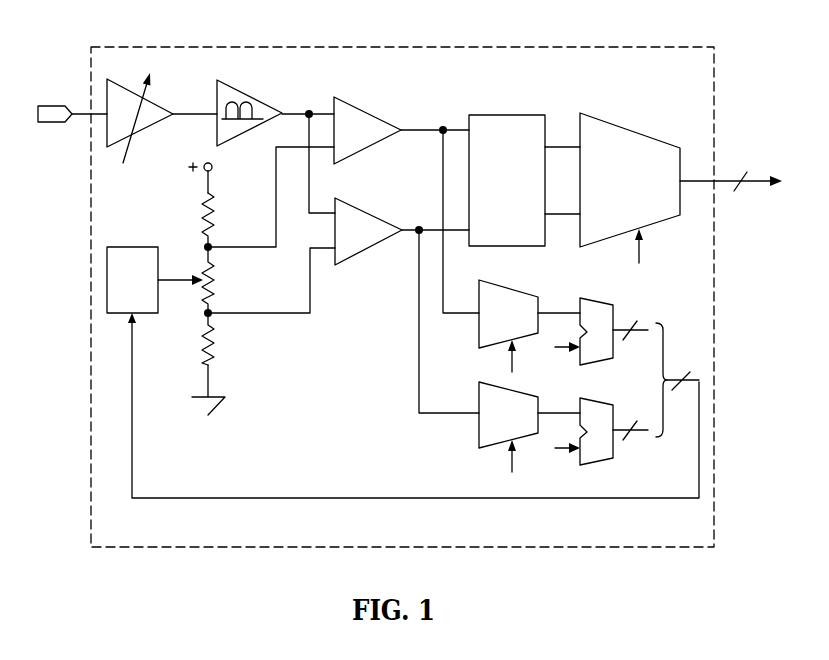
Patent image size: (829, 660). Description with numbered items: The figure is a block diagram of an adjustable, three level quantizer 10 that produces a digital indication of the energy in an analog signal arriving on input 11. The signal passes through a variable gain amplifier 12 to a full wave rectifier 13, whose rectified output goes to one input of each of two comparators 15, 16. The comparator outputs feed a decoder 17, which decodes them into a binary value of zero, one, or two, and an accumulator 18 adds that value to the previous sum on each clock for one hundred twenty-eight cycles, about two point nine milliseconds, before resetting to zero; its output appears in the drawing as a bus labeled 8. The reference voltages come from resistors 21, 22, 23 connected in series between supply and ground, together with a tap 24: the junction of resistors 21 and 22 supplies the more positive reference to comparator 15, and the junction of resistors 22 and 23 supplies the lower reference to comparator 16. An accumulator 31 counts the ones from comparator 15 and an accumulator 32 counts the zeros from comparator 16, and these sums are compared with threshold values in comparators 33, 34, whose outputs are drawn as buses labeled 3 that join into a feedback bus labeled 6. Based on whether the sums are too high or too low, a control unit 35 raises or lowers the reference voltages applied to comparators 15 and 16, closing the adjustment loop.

The adjustable three level quantizer 10 is at (217, 46).
The input 11 is at (55, 103).
The variable gain amplifier 12 is at (148, 132).
The full wave rectifier 13 is at (252, 97).
The comparator 15 is at (369, 110).
The comparator 16 is at (378, 215).
The decoder 17 is at (520, 113).
The accumulator 18 is at (660, 137).
The output bus 8 is at (731, 175).
The resistor 21 is at (220, 204).
The resistor 22 is at (220, 280).
The resistor 23 is at (220, 347).
The tap 24 is at (166, 282).
The control unit 35 is at (147, 245).
The accumulator 31 is at (503, 283).
The accumulator 32 is at (488, 447).
The comparator 33 is at (593, 300).
The comparator 34 is at (593, 463).
The three-bit bus 3 is at (630, 376).
The six-bit feedback bus 6 is at (677, 380).